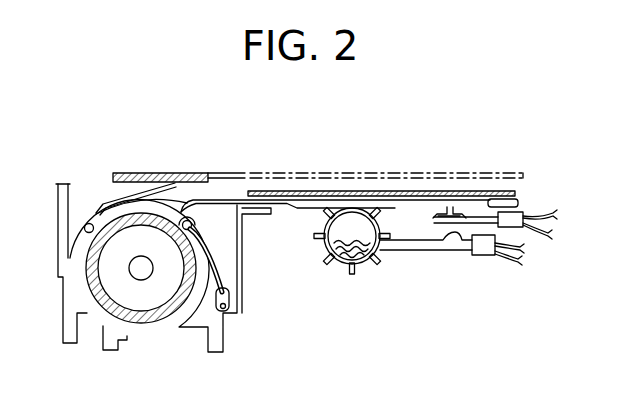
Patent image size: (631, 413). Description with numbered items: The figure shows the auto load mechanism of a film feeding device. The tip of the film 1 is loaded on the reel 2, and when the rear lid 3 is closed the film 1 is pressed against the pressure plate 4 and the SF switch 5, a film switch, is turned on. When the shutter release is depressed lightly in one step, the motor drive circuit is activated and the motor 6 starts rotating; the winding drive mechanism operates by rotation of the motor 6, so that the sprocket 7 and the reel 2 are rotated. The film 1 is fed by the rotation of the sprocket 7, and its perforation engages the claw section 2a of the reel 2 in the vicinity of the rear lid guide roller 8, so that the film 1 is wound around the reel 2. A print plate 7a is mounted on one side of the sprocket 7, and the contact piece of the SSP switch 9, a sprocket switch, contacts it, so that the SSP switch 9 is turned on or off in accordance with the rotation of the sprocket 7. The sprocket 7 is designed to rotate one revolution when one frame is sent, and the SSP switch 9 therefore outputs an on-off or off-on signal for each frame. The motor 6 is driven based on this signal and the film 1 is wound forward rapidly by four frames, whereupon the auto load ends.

The film 1 is at (226, 198).
The reel 2 is at (143, 322).
The claw section 2a is at (112, 210).
The rear lid 3 is at (149, 173).
The pressure plate 4 is at (368, 190).
The SF switch 5 is at (520, 216).
The motor 6 is at (102, 262).
The sprocket 7 is at (326, 252).
The print plate 7a is at (343, 217).
The rear lid guide roller 8 is at (84, 226).
The SSP switch 9 is at (485, 248).